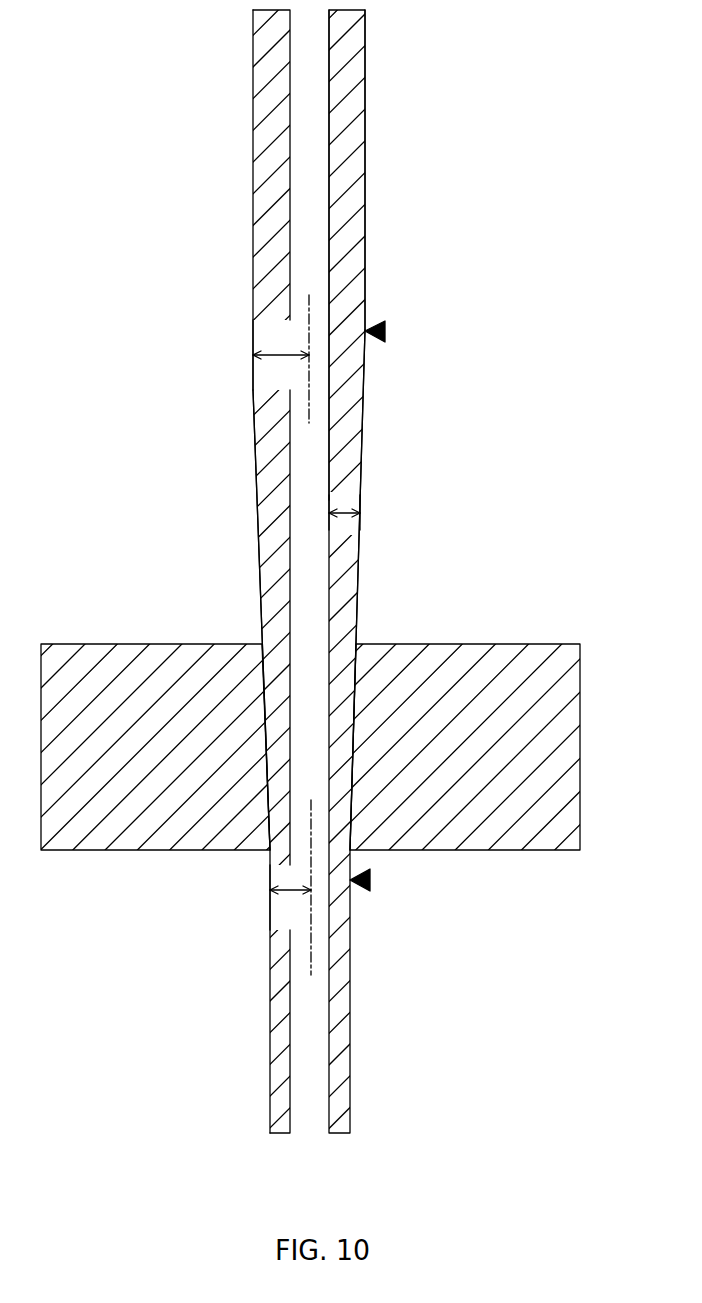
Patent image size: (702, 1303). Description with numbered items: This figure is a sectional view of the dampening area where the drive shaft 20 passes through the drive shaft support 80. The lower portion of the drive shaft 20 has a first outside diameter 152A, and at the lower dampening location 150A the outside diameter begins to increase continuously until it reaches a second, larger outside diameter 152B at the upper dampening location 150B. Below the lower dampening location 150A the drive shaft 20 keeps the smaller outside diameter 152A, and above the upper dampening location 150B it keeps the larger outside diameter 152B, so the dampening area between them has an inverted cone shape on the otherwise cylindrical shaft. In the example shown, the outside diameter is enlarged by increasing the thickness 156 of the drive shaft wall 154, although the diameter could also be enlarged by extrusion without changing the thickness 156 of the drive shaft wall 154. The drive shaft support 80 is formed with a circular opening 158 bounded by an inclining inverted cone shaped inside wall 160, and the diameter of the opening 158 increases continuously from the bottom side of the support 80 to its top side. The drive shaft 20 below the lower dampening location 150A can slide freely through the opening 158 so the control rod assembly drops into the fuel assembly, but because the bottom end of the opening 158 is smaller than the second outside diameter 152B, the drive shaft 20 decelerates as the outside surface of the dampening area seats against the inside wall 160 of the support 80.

The drive shaft 20 is at (253, 168).
The drive shaft support 80 is at (172, 707).
The lower dampening location 150A is at (370, 880).
The upper dampening location 150B is at (385, 331).
The first outside diameter 152A is at (293, 892).
The second outside diameter 152B is at (280, 353).
The drive shaft wall 154 is at (365, 448).
The thickness 156 is at (360, 496).
The circular opening 158 is at (357, 640).
The inside wall 160 is at (263, 697).